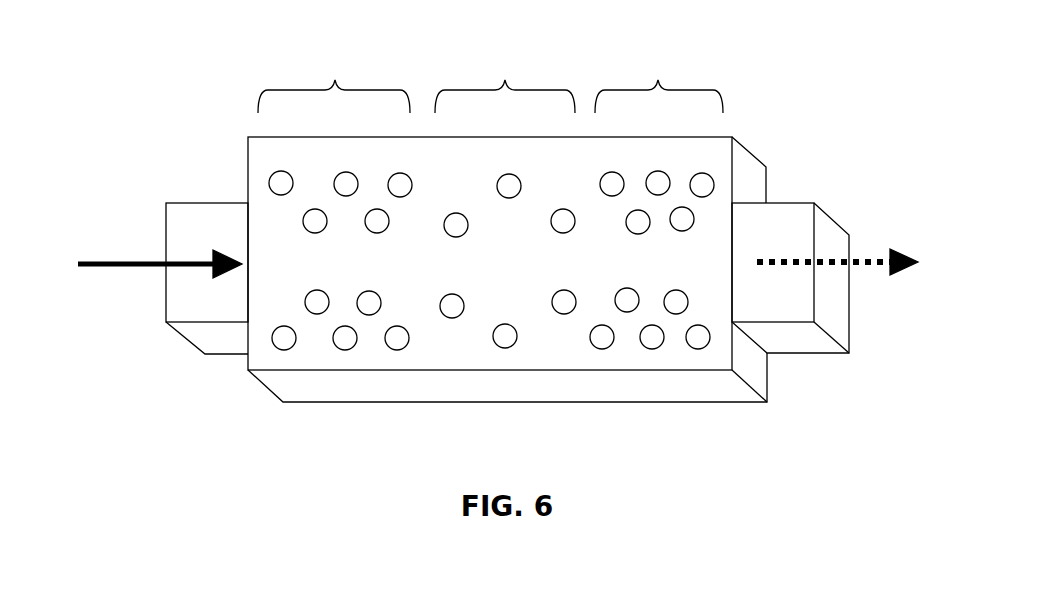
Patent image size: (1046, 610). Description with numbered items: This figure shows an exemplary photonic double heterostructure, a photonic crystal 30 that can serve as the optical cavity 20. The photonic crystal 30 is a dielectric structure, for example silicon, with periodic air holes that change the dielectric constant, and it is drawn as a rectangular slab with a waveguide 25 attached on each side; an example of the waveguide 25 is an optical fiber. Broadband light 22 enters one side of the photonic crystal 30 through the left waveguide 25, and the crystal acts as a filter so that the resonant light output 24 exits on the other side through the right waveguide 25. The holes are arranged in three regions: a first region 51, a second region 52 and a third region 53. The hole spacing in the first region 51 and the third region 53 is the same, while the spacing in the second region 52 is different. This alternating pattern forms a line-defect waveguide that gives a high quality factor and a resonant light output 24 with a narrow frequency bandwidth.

The optical cavity 20 is at (654, 402).
The broadband light 22 is at (120, 268).
The resonant light output 24 is at (862, 263).
The waveguide 25 is at (227, 358).
The photonic crystal 30 is at (343, 350).
The first region 51 is at (335, 80).
The second region 52 is at (505, 80).
The third region 53 is at (658, 80).